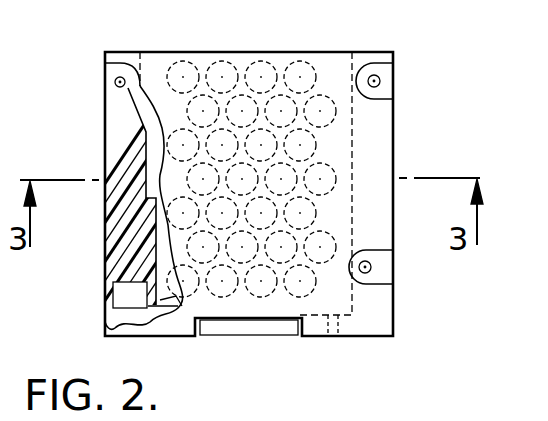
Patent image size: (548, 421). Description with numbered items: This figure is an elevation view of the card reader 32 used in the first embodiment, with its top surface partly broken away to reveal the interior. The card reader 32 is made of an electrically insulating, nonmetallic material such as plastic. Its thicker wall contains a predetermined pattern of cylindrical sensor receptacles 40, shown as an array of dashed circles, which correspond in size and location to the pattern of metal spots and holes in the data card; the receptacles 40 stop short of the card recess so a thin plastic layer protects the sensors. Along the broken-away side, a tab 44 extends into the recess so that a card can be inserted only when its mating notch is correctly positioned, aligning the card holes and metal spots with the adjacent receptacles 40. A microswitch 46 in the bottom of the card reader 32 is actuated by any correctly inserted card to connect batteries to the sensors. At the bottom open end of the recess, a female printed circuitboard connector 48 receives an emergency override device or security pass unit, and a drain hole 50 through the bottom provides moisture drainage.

The card reader 32 is at (399, 152).
The cylindrical sensor receptacles 40 is at (259, 63).
The tab 44 is at (150, 186).
The microswitch 46 is at (118, 300).
The female printed circuitboard connector 48 is at (240, 330).
The drain hole 50 is at (332, 336).